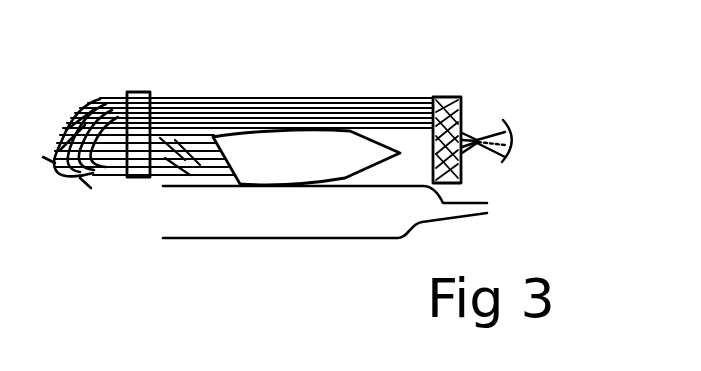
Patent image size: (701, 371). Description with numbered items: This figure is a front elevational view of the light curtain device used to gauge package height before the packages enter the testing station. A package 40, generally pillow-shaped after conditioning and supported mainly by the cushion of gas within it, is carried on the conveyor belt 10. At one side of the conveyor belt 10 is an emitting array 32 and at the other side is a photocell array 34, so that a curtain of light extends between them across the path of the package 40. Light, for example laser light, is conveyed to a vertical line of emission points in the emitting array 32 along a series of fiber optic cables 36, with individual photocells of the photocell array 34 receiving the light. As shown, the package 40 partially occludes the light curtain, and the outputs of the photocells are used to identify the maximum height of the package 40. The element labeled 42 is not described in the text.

The conveyor belt 10 is at (347, 212).
The emitting array 32 is at (142, 92).
The photocell array 34 is at (445, 97).
The fiber optic cables 36 is at (62, 180).
The package 40 is at (346, 172).
The light source 42 is at (497, 128).